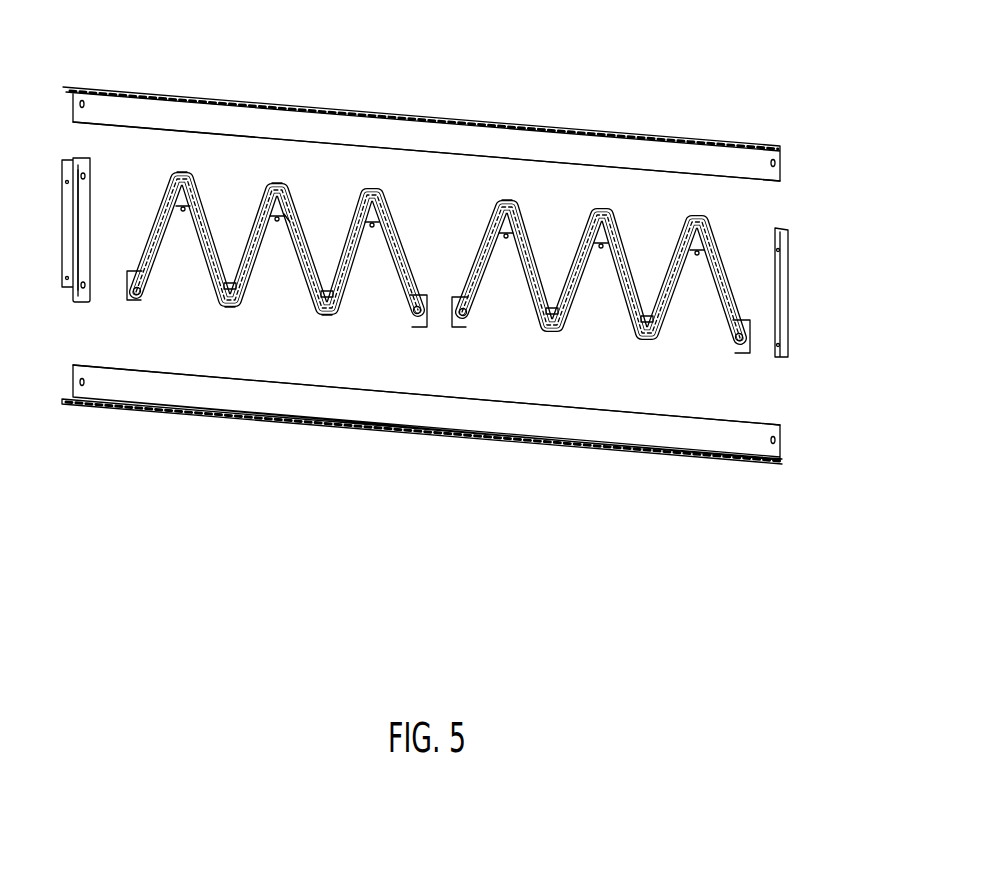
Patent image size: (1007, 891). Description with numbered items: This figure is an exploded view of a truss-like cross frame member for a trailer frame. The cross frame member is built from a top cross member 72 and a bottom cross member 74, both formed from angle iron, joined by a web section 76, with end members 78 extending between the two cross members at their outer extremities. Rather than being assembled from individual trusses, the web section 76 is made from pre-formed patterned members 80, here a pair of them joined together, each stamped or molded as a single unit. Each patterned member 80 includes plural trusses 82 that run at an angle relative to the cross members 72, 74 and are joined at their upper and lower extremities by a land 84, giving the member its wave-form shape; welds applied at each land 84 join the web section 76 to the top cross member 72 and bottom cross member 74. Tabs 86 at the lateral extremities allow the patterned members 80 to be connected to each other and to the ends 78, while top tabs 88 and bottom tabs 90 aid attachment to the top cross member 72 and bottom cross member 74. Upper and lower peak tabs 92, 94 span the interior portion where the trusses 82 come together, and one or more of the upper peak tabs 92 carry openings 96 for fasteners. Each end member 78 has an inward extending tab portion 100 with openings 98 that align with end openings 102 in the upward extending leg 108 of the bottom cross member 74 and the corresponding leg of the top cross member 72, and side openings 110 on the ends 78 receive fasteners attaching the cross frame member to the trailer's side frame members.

The top cross member 72 is at (568, 145).
The bottom cross member 74 is at (550, 422).
The web section 76 is at (435, 262).
The end member 78 is at (425, 248).
The patterned member 80 is at (280, 182).
The truss 82 is at (155, 230).
The land 84 is at (182, 172).
The tab 86 is at (128, 296).
The top tab 88 is at (269, 188).
The bottom tab 90 is at (247, 310).
The upper peak tab 92 is at (178, 212).
The lower peak tab 94 is at (232, 278).
The opening 96 is at (282, 218).
The opening 98 is at (86, 175).
The inward extending tab portion 100 is at (86, 228).
The end opening 102 is at (79, 104).
The upward extending leg 108 is at (86, 121).
The side opening 110 is at (66, 181).